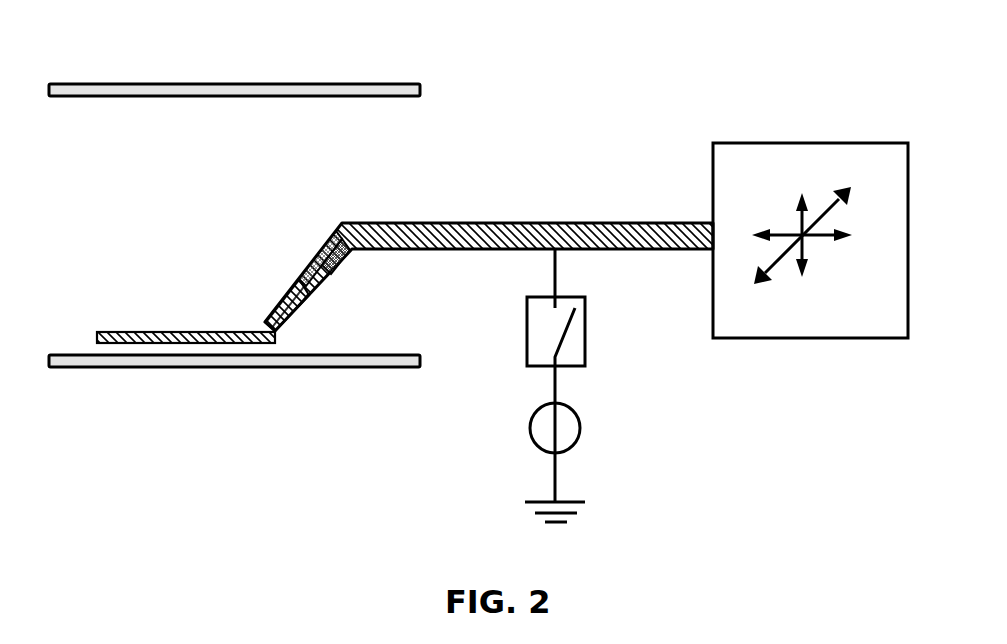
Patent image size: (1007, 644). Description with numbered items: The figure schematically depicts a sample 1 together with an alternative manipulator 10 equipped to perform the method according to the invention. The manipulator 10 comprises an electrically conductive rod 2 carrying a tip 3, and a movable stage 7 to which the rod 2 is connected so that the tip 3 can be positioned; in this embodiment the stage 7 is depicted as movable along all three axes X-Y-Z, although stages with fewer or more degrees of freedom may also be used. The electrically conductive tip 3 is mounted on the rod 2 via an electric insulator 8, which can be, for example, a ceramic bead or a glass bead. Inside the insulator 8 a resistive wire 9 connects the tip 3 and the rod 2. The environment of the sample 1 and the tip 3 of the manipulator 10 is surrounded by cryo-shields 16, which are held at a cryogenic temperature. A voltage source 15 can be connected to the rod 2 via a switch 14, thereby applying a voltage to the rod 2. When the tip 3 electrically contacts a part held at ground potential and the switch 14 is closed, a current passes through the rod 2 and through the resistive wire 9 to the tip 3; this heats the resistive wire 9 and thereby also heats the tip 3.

The sample 1 is at (120, 333).
The rod 2 is at (414, 230).
The tip 3 is at (267, 312).
The movable stage 7 is at (783, 338).
The electric insulator 8 is at (312, 253).
The resistive wire 9 is at (337, 256).
The manipulator 10 is at (651, 154).
The switch 14 is at (527, 327).
The voltage source 15 is at (531, 432).
The cryo-shields 16 is at (240, 84).